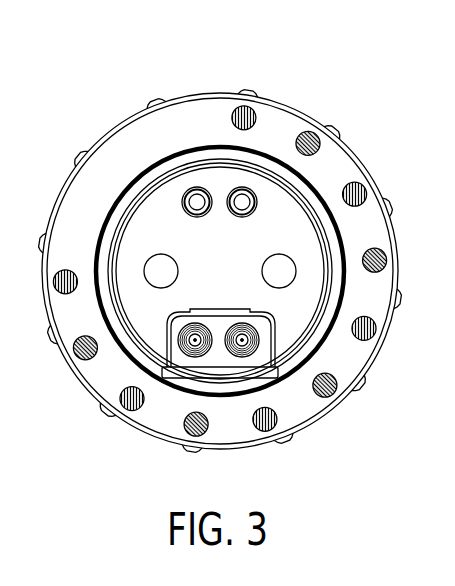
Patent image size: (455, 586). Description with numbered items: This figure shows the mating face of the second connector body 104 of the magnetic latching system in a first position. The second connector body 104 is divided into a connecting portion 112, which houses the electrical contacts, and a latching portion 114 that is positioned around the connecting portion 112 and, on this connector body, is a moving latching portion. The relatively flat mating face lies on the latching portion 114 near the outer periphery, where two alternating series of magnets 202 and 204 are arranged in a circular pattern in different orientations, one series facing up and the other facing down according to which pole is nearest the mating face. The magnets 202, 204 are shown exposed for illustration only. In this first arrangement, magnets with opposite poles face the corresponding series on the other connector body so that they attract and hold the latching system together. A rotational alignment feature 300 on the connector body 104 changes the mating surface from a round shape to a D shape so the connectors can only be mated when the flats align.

The second connector body 104 is at (237, 254).
The latching portion 114 is at (397, 238).
The connecting portion 112 is at (312, 250).
The magnets 204 is at (54, 330).
The magnets 202 is at (95, 398).
The rotational alignment feature 300 is at (220, 378).